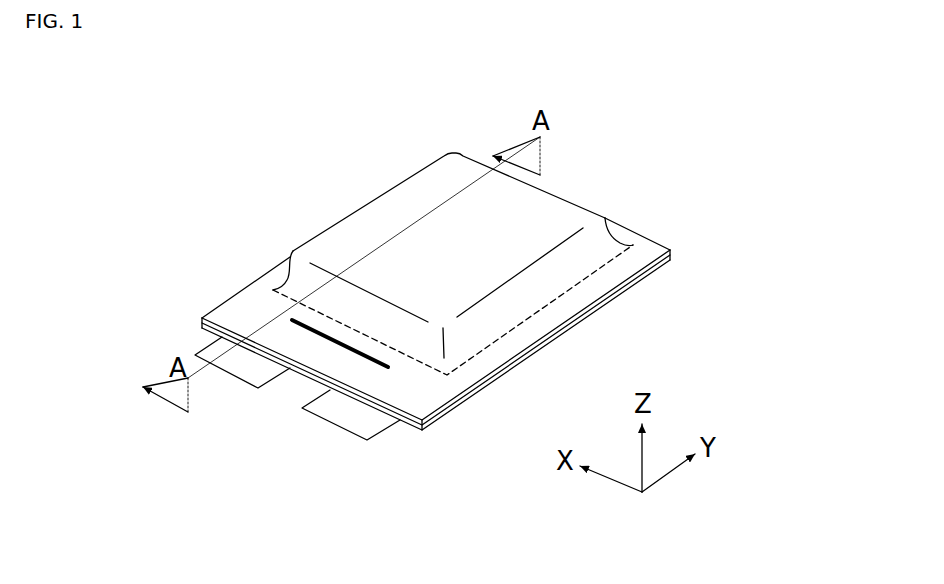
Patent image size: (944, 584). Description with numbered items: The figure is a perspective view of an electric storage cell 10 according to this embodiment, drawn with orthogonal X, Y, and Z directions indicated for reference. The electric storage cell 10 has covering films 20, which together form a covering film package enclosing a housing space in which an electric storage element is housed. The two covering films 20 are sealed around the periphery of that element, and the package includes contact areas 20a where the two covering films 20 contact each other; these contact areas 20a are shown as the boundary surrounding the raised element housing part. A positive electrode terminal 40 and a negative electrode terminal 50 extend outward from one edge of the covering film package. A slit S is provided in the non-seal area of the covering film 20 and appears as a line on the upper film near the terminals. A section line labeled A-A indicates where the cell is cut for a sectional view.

The electric storage cell 10 is at (432, 259).
The covering film 20 is at (469, 257).
The contact area 20a is at (563, 300).
The positive electrode terminal 40 is at (238, 363).
The negative electrode terminal 50 is at (348, 410).
The slit S is at (377, 367).